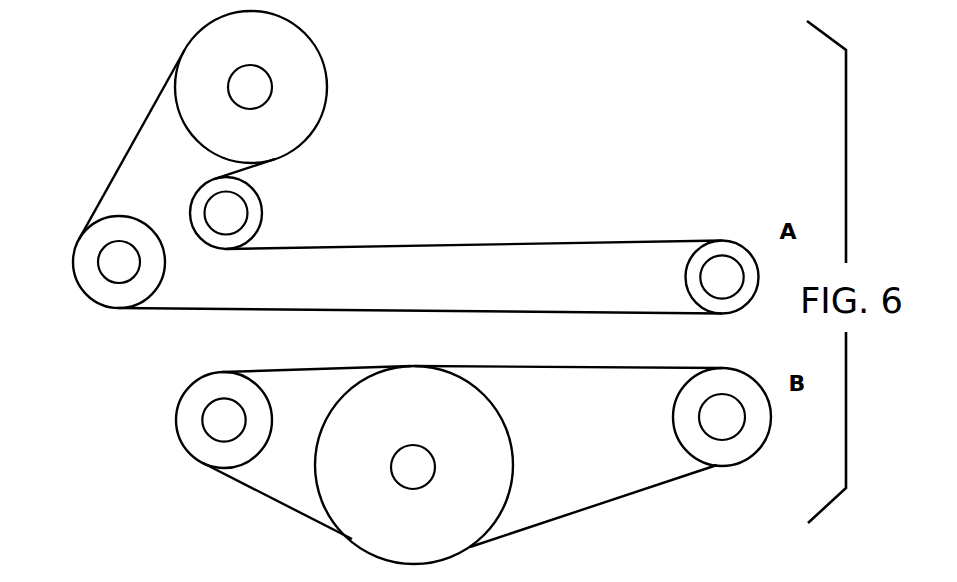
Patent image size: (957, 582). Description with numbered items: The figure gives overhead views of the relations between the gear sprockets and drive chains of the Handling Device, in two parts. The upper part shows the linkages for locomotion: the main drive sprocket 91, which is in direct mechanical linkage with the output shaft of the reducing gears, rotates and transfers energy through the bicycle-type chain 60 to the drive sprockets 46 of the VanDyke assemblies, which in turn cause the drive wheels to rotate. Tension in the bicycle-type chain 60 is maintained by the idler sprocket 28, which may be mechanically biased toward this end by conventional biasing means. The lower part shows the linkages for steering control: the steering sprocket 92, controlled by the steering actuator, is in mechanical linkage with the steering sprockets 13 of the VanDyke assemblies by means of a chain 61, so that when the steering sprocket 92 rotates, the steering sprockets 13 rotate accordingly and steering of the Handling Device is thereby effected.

The main drive sprocket 91 is at (310, 87).
The drive sprocket 46 is at (251, 207).
The bicycle-type chain 60 is at (433, 243).
The idler sprocket 28 is at (82, 262).
The steering sprocket 13 is at (185, 412).
The steering sprocket 92 is at (485, 428).
The belt 61 is at (642, 495).